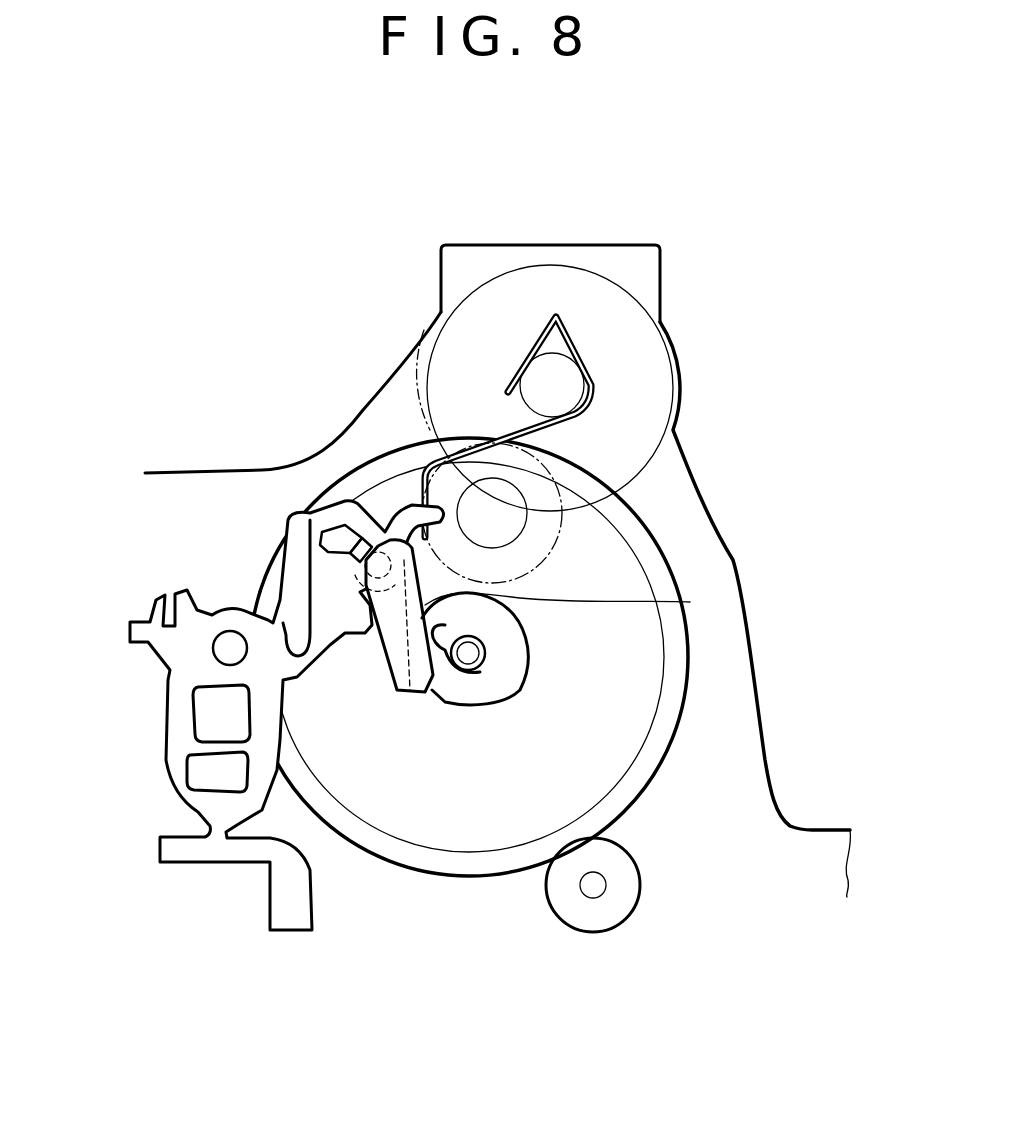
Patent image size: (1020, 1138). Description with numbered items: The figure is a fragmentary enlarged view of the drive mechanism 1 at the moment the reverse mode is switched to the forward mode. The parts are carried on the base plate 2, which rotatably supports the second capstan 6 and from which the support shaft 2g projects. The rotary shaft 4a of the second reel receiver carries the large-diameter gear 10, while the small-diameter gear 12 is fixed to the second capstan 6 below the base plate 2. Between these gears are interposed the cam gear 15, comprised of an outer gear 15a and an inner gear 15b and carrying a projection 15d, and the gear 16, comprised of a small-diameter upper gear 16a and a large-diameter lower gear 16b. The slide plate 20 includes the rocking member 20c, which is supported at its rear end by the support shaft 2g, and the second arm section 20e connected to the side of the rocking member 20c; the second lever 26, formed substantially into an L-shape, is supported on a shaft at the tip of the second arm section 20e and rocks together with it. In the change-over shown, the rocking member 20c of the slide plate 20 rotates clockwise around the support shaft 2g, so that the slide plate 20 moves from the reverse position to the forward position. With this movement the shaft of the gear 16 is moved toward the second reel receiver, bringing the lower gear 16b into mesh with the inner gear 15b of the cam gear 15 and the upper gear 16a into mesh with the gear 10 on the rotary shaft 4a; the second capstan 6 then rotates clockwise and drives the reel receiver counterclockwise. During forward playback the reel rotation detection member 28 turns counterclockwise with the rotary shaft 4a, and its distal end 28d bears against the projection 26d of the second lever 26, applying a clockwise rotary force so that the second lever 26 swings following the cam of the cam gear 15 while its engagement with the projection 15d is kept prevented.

The drive mechanism 1 is at (228, 298).
The base plate 2 is at (601, 235).
The support shaft 2g is at (230, 640).
The rotary shaft of the second reel receiver 4a is at (563, 390).
The second capstan 6 is at (585, 890).
The large-diameter gear 10 is at (428, 345).
The small-diameter gear 12 is at (594, 913).
The cam gear 15 is at (571, 657).
The outer gear 15a is at (688, 630).
The inner gear 15b is at (670, 685).
The projection 15d is at (690, 602).
The gear 16 is at (643, 513).
The small-diameter upper gear 16a is at (558, 489).
The large-diameter lower gear 16b is at (527, 517).
The slide plate 20 is at (244, 681).
The rocking member 20c is at (175, 712).
The second arm section 20e is at (293, 520).
The second lever 26 is at (418, 625).
The projection 26d is at (418, 482).
The reel rotation detection member 28 is at (587, 355).
The distal end 28d is at (415, 495).